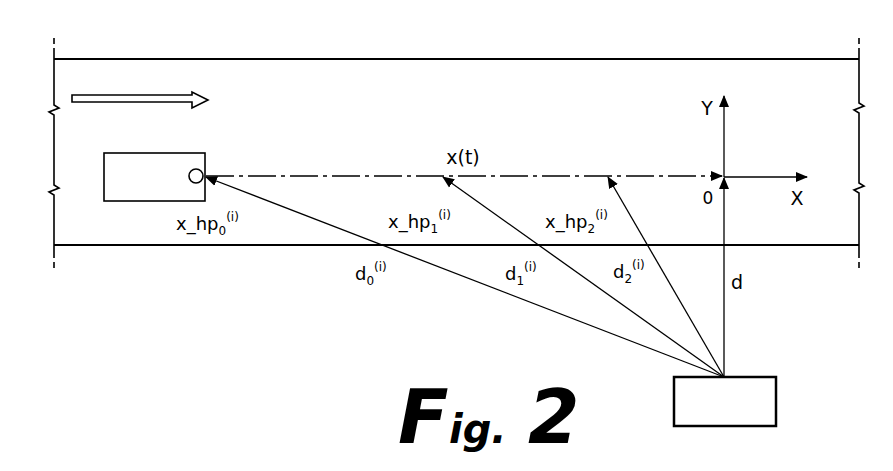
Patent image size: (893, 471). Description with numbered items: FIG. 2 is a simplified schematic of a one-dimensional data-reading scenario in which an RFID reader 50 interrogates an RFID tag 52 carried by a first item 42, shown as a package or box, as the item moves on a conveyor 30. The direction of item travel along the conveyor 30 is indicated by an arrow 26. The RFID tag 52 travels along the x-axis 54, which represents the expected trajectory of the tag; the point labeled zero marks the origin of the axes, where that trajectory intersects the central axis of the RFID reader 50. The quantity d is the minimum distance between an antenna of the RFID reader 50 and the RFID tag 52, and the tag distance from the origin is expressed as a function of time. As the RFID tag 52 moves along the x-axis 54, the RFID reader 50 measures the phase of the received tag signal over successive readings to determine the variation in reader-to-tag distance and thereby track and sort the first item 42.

The web travel direction 26 is at (128, 95).
The conveyor 30 is at (270, 88).
The first item 42 is at (125, 185).
The RFID reader 50 is at (725, 401).
The RFID tag 52 is at (189, 177).
The x-axis 54 is at (298, 176).